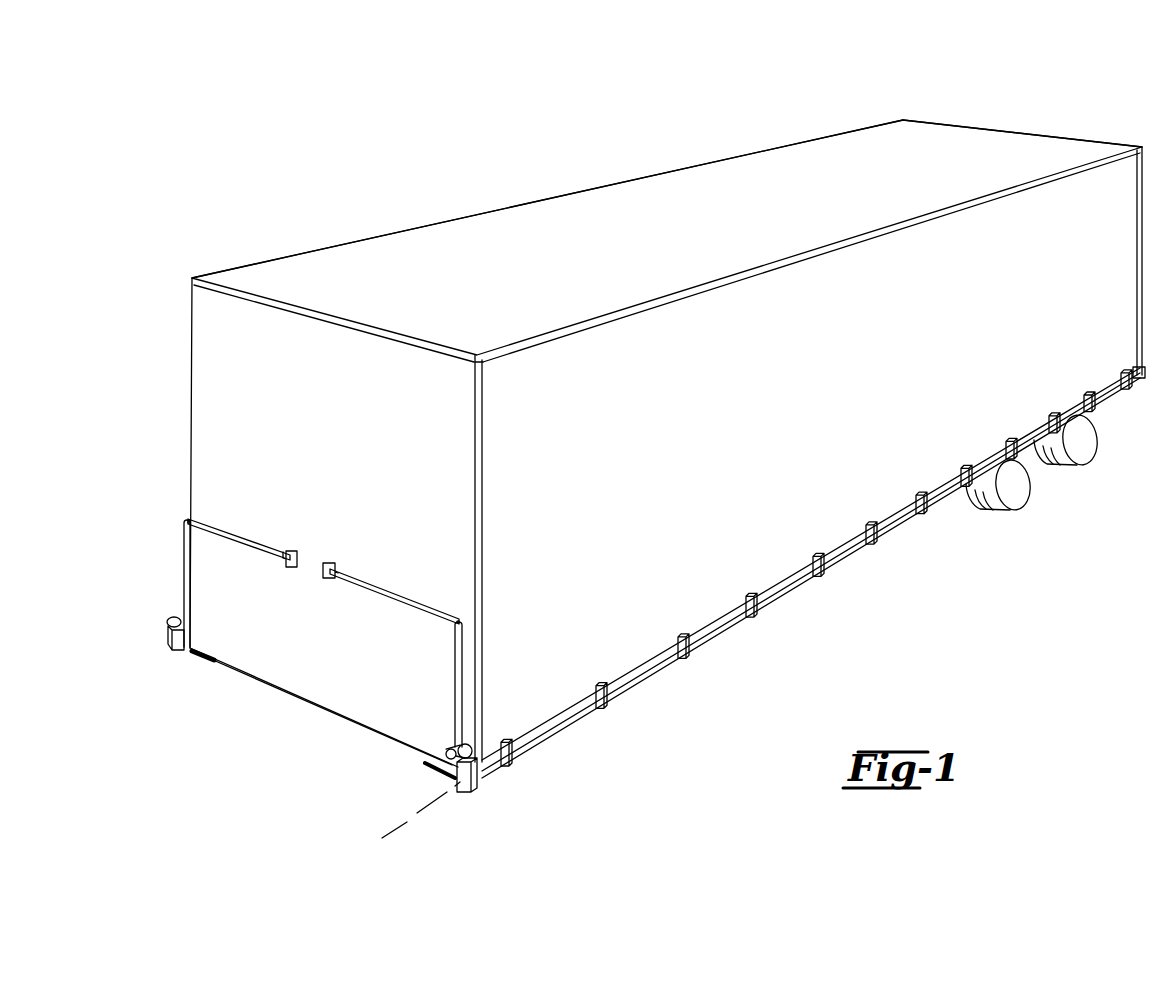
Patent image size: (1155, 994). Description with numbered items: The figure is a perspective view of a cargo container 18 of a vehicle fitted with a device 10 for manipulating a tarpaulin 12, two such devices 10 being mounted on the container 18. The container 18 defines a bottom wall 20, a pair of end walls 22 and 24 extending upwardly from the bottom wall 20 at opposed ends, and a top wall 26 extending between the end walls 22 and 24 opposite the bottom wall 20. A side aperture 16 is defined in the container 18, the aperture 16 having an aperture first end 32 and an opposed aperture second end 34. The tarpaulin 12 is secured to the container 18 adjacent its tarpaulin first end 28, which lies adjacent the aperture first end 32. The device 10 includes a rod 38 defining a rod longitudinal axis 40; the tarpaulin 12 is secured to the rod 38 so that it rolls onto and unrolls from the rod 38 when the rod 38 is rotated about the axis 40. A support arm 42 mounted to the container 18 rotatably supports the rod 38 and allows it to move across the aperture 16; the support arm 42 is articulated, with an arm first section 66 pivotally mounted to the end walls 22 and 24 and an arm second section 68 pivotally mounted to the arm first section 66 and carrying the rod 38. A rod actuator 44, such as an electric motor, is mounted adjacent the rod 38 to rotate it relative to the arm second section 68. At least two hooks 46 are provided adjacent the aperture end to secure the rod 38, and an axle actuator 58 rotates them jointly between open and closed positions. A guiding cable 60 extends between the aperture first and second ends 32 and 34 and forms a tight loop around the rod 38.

The device 10 is at (319, 666).
The tarpaulin 12 is at (667, 466).
The side aperture 16 is at (476, 610).
The cargo container 18 is at (347, 237).
The bottom wall 20 is at (293, 693).
The end wall 22 is at (332, 446).
The end wall 24 is at (1062, 137).
The top wall 26 is at (652, 239).
The tarpaulin first end 28 is at (640, 312).
The aperture first end 32 is at (523, 352).
The aperture second end 34 is at (570, 727).
The rod 38 is at (513, 777).
The rod longitudinal axis 40 is at (438, 848).
The support arm 42 is at (432, 606).
The rod actuator 44 is at (445, 755).
The hook 46 is at (505, 744).
The axle actuator 58 is at (215, 655).
The guiding cable 60 is at (1137, 212).
The arm first section 66 is at (242, 537).
The arm second section 68 is at (188, 550).